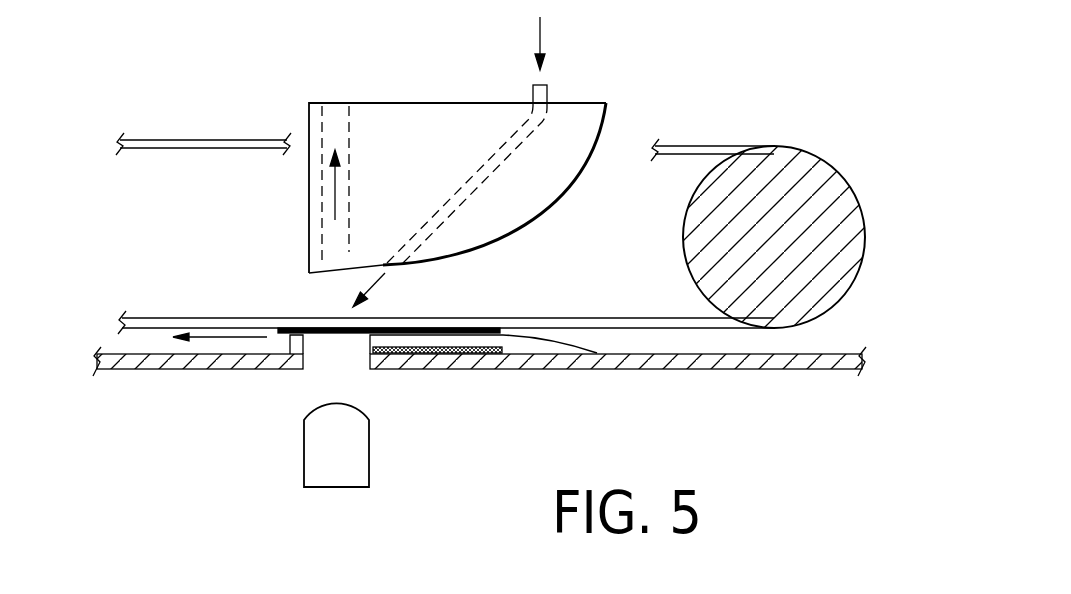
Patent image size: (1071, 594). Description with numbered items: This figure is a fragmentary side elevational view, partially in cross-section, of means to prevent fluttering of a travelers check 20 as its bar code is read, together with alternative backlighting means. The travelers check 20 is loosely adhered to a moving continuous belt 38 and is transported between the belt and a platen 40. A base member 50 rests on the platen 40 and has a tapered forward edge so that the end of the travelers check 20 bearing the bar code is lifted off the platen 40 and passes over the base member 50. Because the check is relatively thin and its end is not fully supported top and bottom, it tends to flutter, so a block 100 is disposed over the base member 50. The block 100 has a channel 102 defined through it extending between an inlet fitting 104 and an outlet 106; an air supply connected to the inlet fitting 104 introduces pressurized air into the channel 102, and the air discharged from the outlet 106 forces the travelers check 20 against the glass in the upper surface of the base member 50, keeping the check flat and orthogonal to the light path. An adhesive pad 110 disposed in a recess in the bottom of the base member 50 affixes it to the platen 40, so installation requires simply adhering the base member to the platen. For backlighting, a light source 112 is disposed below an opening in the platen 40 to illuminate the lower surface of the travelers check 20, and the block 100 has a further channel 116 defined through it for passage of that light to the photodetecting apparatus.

The travelers check 20 is at (313, 327).
The continuous belt 38 is at (618, 322).
The platen 40 is at (208, 358).
The base member 50 is at (527, 348).
The block 100 is at (385, 118).
The channel 102 is at (487, 147).
The inlet fitting 104 is at (543, 92).
The outlet 106 is at (398, 288).
The adhesive pad 110 is at (428, 355).
The light source 112 is at (317, 448).
The channel 116 is at (300, 193).